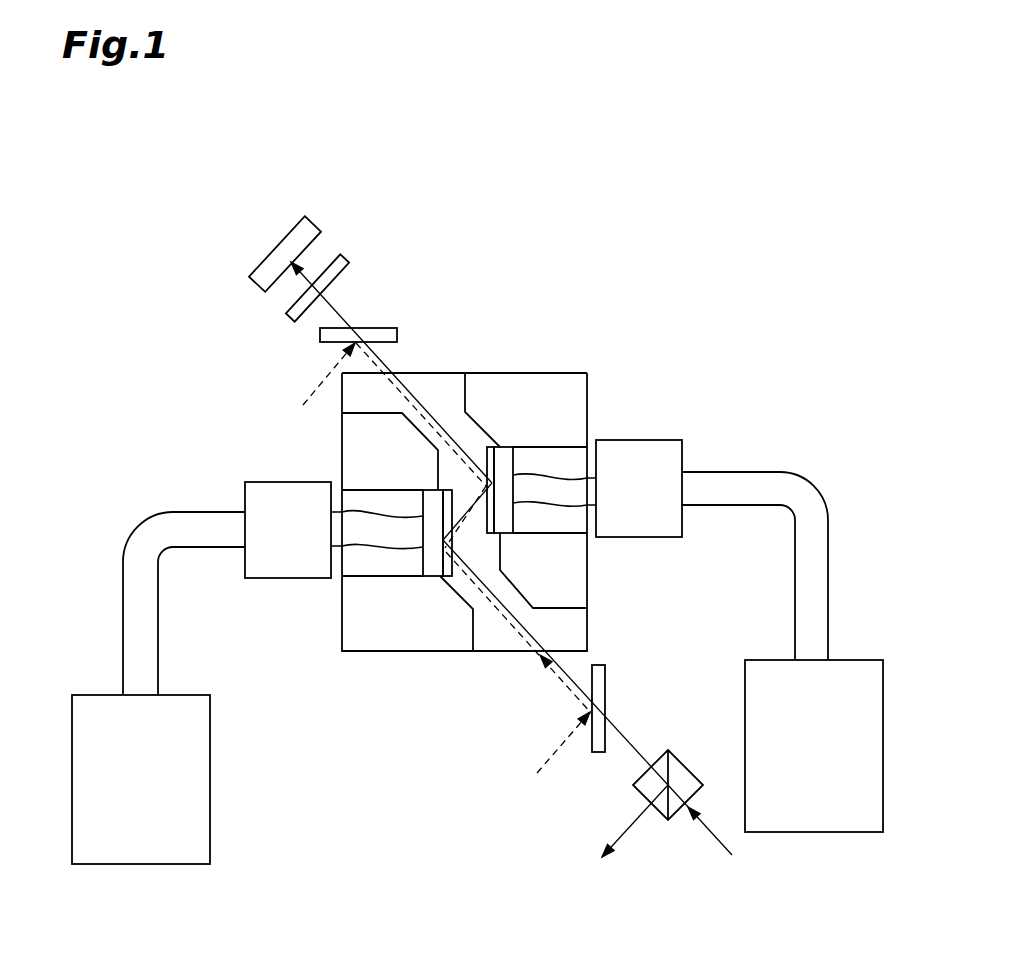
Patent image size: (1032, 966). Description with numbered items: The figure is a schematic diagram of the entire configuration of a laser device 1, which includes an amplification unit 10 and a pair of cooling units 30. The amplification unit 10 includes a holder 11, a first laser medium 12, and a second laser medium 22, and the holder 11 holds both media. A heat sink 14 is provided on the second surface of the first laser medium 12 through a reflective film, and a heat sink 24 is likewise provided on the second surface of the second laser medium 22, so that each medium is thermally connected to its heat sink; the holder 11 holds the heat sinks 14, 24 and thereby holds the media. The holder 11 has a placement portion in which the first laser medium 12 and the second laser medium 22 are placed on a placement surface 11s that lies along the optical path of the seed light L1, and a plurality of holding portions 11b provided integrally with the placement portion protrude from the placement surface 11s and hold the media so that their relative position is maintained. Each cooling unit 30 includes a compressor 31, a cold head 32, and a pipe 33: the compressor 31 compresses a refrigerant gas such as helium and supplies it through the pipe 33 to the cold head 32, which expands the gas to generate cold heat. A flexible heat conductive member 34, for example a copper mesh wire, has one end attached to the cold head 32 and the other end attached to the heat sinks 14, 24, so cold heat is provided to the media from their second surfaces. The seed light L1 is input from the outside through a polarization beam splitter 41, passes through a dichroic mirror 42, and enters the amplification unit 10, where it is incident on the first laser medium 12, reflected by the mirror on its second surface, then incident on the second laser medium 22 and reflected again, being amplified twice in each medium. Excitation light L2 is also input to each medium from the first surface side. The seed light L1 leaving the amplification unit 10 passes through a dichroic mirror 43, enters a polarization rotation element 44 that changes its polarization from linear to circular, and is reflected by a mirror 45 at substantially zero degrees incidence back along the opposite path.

The laser device 1 is at (665, 134).
The amplification unit 10 is at (577, 357).
The holder 11 is at (452, 372).
The placement surface 11s is at (464, 321).
The holding portion 11b is at (528, 390).
The first laser medium 12 is at (446, 575).
The heat sink 14 is at (432, 560).
The second laser medium 22 is at (500, 530).
The heat sink 24 is at (507, 522).
The cooling unit 30 is at (798, 412).
The compressor 31 is at (138, 865).
The cold head 32 is at (287, 580).
The pipe 33 is at (133, 580).
The heat conductive member 34 is at (397, 533).
The polarization beam splitter 41 is at (690, 815).
The dichroic mirror 42 is at (592, 740).
The dichroic mirror 43 is at (375, 328).
The polarization rotation element 44 is at (332, 262).
The mirror 45 is at (285, 232).
The seed light L1 is at (632, 745).
The excitation light L2 is at (313, 388).